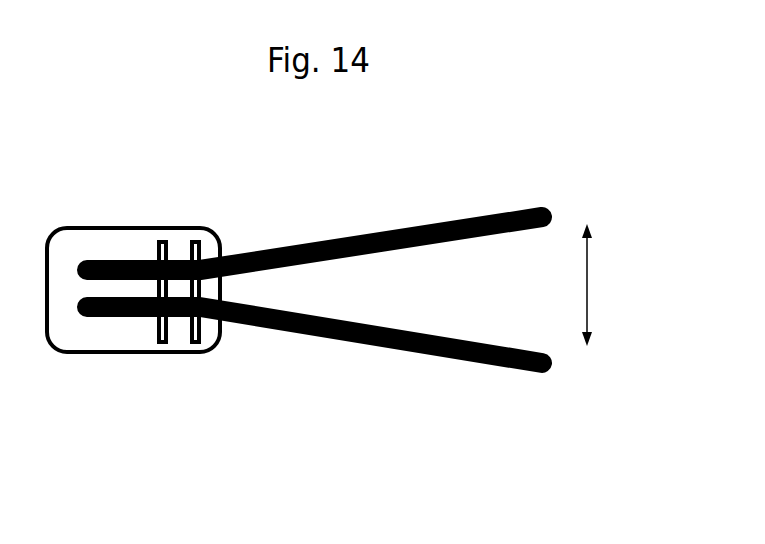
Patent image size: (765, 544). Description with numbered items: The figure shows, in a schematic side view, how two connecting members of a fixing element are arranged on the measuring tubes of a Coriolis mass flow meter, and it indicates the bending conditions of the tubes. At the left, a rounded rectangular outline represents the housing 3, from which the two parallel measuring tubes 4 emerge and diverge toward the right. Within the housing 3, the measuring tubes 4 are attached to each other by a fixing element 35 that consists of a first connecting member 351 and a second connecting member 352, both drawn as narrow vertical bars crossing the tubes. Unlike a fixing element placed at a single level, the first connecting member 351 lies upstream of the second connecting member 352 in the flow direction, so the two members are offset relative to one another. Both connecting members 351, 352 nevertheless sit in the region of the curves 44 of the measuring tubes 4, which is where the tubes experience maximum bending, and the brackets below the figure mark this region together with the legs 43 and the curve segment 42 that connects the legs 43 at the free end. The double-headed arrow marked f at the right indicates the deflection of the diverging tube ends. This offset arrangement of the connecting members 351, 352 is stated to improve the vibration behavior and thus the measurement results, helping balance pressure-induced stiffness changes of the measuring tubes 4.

The housing 3 is at (90, 227).
The fixing element 35 is at (177, 214).
The first connecting member 351 is at (156, 240).
The second connecting member 352 is at (216, 246).
The measuring tubes 4 is at (495, 233).
The curve segment 42 is at (543, 400).
The legs 43 is at (475, 400).
The curves 44 is at (88, 400).
The deflection / force direction f is at (587, 278).